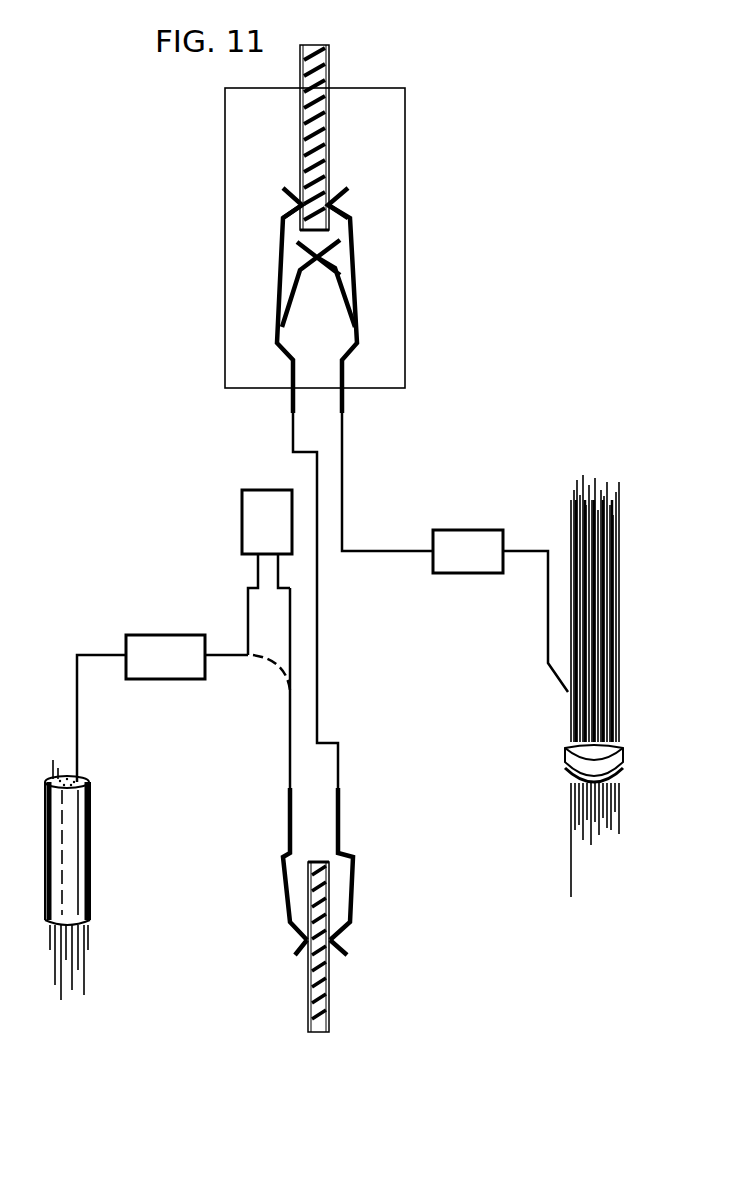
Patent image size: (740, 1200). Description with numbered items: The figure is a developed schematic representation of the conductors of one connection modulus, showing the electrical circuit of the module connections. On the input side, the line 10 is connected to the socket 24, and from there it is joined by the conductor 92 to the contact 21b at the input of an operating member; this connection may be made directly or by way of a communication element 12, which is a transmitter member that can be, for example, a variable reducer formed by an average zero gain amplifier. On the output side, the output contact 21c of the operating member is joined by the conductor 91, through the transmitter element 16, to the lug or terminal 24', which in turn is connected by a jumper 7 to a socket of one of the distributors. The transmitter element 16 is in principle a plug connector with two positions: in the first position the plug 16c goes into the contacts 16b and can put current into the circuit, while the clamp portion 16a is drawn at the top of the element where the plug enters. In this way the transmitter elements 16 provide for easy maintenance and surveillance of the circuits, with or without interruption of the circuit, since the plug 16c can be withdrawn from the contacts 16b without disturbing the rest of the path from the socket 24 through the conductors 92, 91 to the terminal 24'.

The transmitter element 16 is at (225, 218).
The clamp arms 16a is at (336, 203).
The contacts 16b is at (325, 263).
The plug 16c is at (330, 163).
The communication element 12 is at (253, 523).
The socket 24 is at (162, 685).
The lug or terminal 24' is at (500, 582).
The conductor 91 is at (317, 653).
The conductor 92 is at (290, 748).
The jumper 7 is at (597, 692).
The line 10 is at (68, 857).
The input contact of the operating member 21b is at (308, 977).
The output contact of the operating member 21c is at (329, 977).